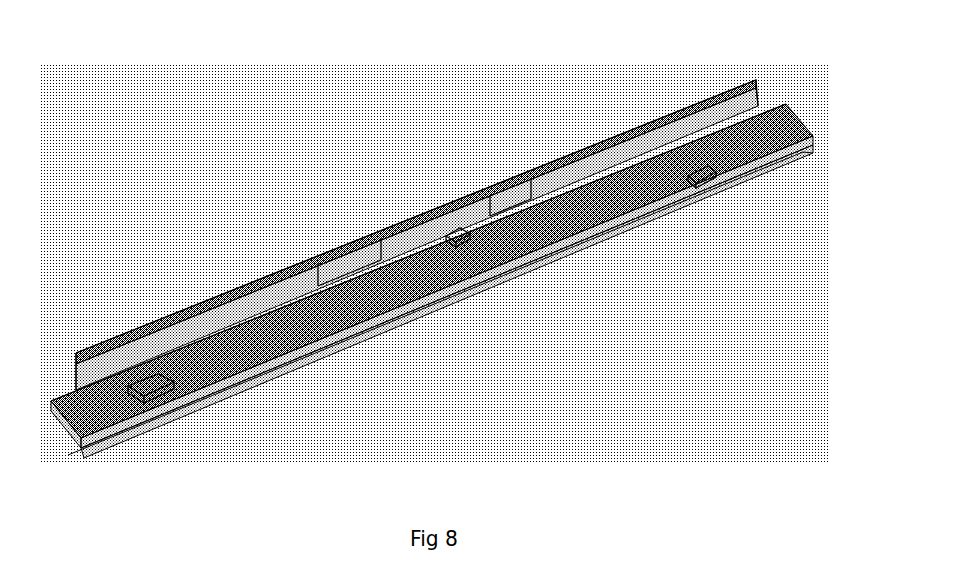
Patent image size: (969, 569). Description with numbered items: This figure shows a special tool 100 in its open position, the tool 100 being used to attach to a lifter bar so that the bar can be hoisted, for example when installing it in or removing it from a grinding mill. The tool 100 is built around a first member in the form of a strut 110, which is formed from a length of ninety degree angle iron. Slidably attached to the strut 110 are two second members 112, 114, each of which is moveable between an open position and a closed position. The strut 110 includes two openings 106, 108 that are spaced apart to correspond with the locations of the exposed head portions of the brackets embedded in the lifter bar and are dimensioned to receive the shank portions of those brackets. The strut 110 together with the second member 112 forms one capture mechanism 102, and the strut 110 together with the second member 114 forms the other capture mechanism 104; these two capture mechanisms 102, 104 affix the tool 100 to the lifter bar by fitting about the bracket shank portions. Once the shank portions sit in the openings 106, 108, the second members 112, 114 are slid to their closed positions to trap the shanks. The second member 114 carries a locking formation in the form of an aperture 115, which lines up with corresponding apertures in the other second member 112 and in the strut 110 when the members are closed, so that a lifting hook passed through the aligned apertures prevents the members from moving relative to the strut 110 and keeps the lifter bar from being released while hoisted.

The tool 100 is at (310, 192).
The capture mechanism 102 is at (203, 410).
The capture mechanism 104 is at (715, 220).
The opening 106 is at (163, 396).
The opening 108 is at (698, 175).
The strut 110 is at (235, 277).
The second member 112 is at (73, 410).
The second member 114 is at (778, 105).
The aperture 115 is at (450, 228).